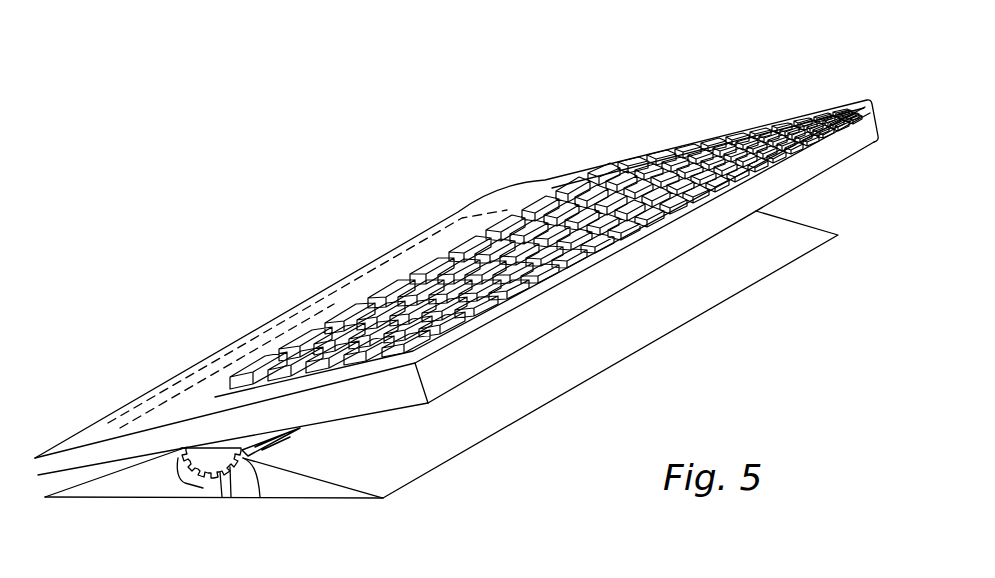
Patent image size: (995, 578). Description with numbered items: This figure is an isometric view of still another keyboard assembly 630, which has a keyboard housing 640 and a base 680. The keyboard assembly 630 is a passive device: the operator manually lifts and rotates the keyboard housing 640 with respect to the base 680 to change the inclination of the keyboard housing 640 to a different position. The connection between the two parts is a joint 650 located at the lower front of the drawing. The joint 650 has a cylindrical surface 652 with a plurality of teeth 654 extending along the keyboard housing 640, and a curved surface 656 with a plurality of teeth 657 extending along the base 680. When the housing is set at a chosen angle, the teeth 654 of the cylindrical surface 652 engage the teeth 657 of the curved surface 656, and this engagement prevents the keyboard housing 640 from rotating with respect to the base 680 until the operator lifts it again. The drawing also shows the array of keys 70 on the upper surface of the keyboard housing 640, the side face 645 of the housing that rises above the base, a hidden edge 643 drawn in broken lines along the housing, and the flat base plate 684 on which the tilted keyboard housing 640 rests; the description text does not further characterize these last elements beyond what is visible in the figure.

The keyboard assembly 630 is at (717, 109).
The keyboard housing 640 is at (828, 110).
The front face of keyboard housing 645 is at (798, 174).
The hidden edge of keyboard housing 643 is at (373, 262).
The keys 70 is at (647, 153).
The base plate 684 is at (503, 404).
The base 680 is at (290, 492).
The cylindrical surface 652 is at (210, 443).
The joint 650 is at (183, 483).
The curved surface 656 is at (258, 498).
The teeth 657 is at (222, 497).
The teeth 654 is at (293, 430).